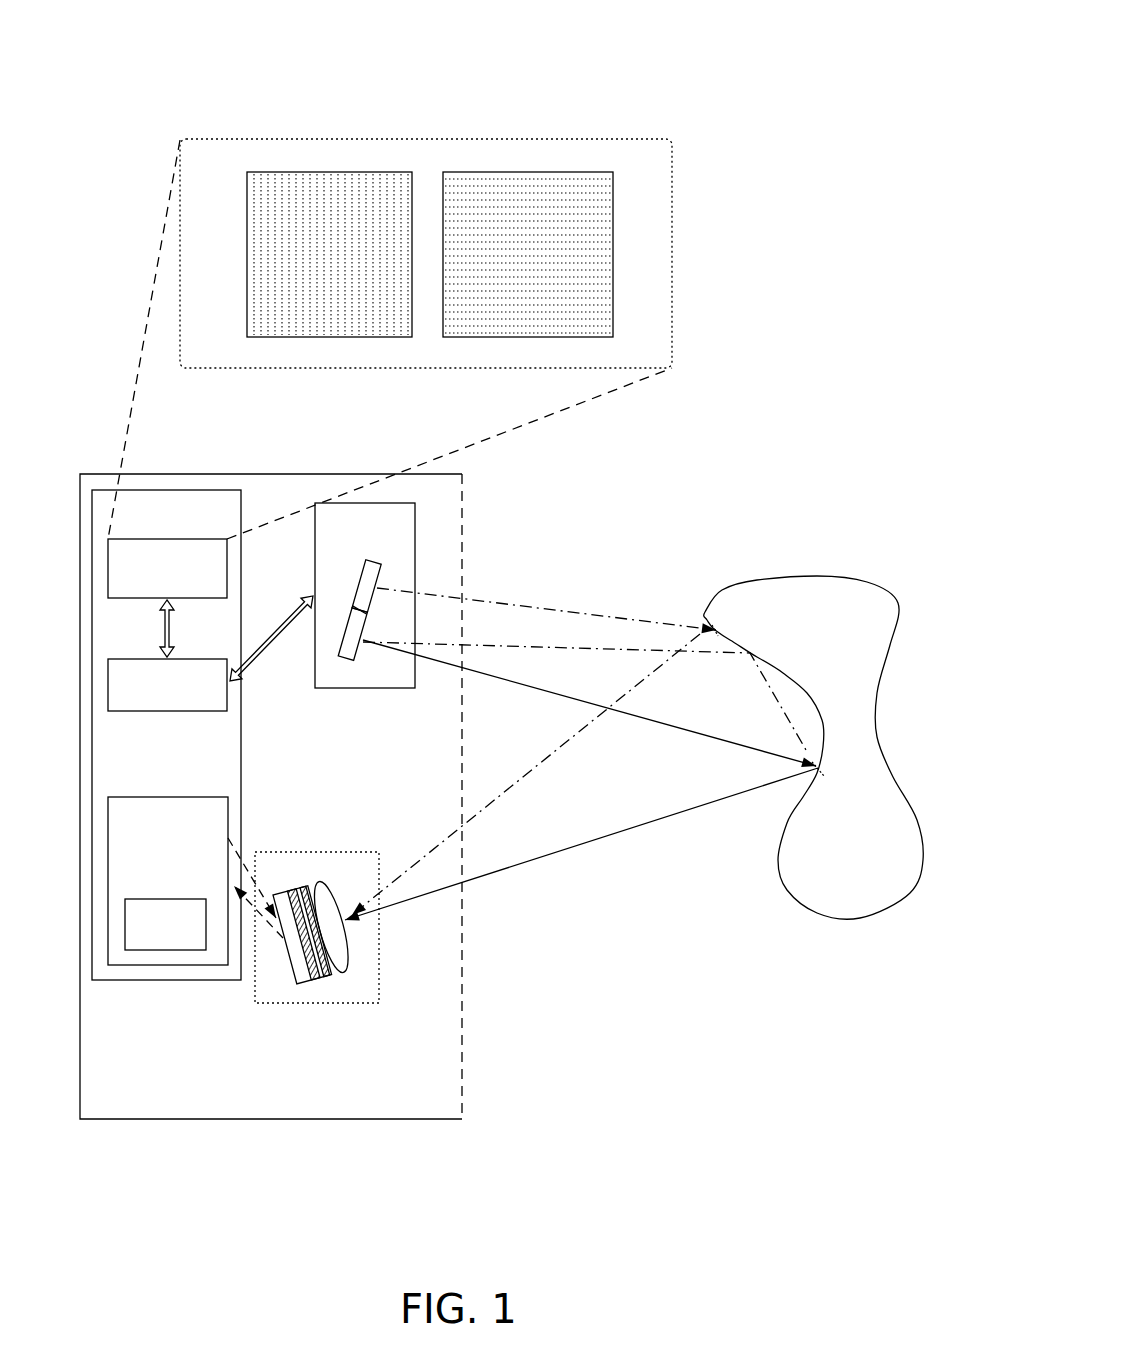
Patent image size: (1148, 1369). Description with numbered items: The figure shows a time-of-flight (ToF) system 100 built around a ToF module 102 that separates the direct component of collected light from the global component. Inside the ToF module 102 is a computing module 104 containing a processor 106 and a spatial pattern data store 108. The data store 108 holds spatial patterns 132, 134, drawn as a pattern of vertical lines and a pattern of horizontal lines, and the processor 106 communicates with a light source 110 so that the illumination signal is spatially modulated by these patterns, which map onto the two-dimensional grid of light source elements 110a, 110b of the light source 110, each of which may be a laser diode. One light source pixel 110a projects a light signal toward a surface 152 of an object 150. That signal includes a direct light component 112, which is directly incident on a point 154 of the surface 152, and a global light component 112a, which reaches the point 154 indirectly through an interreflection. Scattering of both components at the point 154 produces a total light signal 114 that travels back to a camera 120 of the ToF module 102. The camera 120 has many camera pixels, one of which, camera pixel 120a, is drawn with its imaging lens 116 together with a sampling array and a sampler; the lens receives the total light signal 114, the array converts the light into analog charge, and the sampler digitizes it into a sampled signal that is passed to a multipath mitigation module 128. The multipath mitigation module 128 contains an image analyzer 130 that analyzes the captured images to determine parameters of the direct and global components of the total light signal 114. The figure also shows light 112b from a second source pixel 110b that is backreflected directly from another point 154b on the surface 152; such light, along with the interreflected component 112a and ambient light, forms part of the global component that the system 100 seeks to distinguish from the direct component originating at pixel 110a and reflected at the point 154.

The ToF system 100 is at (198, 80).
The ToF module 102 is at (210, 1120).
The computing module 104 is at (242, 735).
The processor 106 is at (150, 699).
The spatial pattern data store 108 is at (150, 580).
The light source 110 is at (443, 615).
The light source pixel 110a is at (349, 662).
The light source pixel 110b is at (378, 578).
The direct light component 112 is at (563, 698).
The global light component 112a is at (593, 647).
The light 112b is at (660, 624).
The total light signal 114 is at (553, 860).
The imaging lens 116 is at (337, 895).
The camera 120 is at (361, 1012).
The camera pixel 120a is at (379, 982).
The multipath mitigation module 128 is at (151, 827).
The image analyzer 130 is at (148, 934).
The spatial pattern 132 is at (340, 172).
The spatial pattern 134 is at (528, 172).
The object 150 is at (804, 803).
The surface 152 is at (778, 862).
The point 154 is at (822, 777).
The another point 154b is at (723, 629).